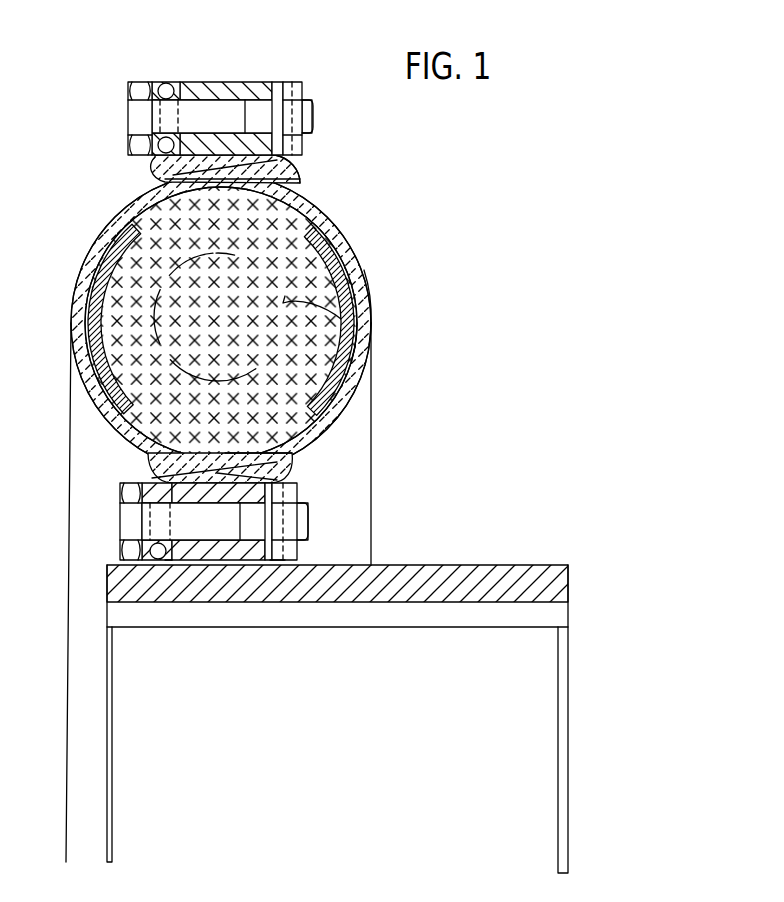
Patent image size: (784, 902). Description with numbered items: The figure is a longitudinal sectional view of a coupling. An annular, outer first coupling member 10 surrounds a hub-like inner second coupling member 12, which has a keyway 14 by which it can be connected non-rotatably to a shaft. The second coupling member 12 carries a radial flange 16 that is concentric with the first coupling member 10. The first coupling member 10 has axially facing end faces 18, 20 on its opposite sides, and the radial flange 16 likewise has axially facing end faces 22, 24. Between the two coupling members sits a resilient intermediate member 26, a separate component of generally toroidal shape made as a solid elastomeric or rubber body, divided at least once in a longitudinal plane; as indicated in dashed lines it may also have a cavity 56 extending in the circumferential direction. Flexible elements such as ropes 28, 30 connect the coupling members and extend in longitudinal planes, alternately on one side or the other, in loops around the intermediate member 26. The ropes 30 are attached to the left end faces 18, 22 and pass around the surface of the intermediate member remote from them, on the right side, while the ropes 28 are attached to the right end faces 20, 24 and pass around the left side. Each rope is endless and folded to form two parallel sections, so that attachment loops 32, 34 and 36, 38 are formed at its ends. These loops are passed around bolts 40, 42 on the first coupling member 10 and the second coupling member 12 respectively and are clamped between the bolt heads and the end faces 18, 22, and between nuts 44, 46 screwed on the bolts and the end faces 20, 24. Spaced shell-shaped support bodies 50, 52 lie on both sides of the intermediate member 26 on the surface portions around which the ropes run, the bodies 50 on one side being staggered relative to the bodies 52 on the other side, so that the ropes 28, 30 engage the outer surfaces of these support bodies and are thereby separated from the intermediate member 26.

The first coupling member 10 is at (226, 90).
The second coupling member 12 is at (408, 578).
The keyway 14 is at (410, 630).
The radial flange 16 is at (275, 462).
The end face 18 is at (170, 88).
The end face 20 is at (277, 100).
The end face 22 is at (168, 562).
The end face 24 is at (278, 562).
The intermediate member 26 is at (343, 218).
The flexible element 28 is at (92, 300).
The flexible element 30 is at (360, 250).
The attachment loop 32 is at (170, 85).
The attachment loop 34 is at (142, 554).
The attachment loop 36 is at (286, 164).
The attachment loop 38 is at (284, 489).
The bolt 40 is at (198, 116).
The bolt 42 is at (192, 542).
The nut 44 is at (296, 94).
The nut 46 is at (298, 552).
The shell-shaped body 50 is at (88, 262).
The shell-shaped body 52 is at (367, 290).
The cavity 56 is at (352, 330).